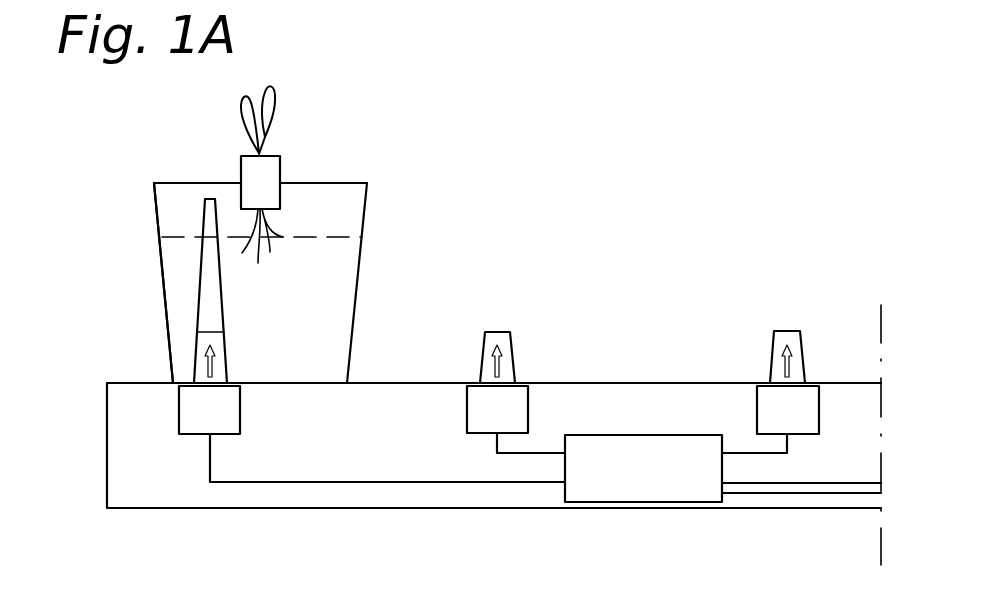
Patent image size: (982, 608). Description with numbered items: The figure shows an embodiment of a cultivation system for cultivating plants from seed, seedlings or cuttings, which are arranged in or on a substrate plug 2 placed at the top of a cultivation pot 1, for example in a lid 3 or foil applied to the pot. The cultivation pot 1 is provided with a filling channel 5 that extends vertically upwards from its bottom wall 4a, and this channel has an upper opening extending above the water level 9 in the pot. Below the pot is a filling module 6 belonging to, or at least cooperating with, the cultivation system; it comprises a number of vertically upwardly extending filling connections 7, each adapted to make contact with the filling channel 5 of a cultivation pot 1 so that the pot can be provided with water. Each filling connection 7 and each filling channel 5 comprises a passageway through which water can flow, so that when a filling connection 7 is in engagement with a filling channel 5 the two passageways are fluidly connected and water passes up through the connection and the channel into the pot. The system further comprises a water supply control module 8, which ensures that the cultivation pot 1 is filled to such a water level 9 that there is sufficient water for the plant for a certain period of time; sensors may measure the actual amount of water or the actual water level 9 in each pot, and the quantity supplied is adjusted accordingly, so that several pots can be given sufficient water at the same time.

The cultivation pot 1 is at (367, 203).
The substrate plug 2 is at (268, 173).
The lid 3 is at (198, 182).
The bottom wall 4a is at (330, 383).
The filling channel 5 is at (199, 299).
The filling module 6 is at (130, 462).
The filling connection 7 is at (199, 350).
The water supply control module 8 is at (662, 480).
The water level 9 is at (340, 238).